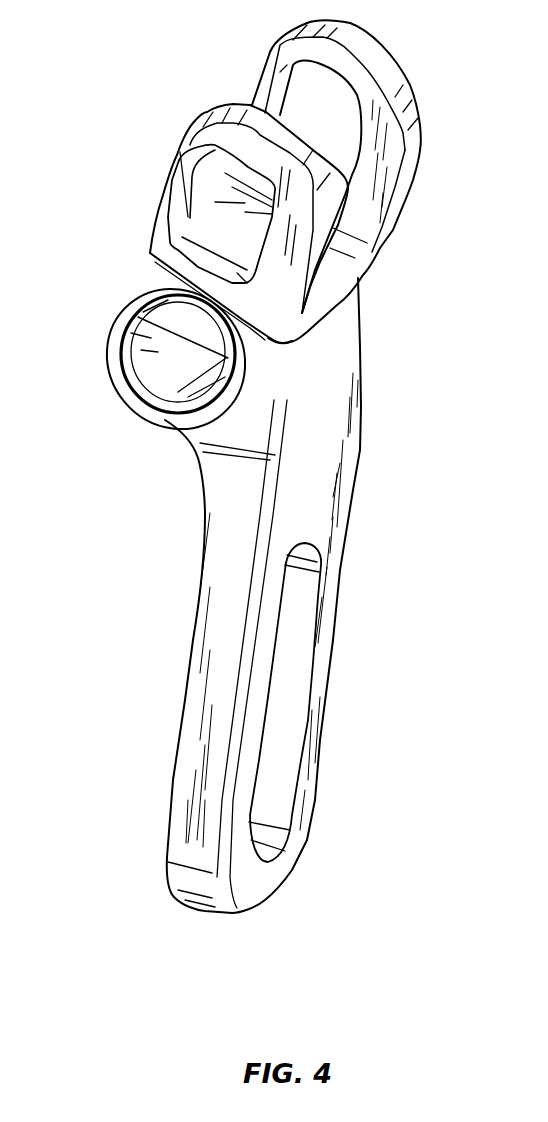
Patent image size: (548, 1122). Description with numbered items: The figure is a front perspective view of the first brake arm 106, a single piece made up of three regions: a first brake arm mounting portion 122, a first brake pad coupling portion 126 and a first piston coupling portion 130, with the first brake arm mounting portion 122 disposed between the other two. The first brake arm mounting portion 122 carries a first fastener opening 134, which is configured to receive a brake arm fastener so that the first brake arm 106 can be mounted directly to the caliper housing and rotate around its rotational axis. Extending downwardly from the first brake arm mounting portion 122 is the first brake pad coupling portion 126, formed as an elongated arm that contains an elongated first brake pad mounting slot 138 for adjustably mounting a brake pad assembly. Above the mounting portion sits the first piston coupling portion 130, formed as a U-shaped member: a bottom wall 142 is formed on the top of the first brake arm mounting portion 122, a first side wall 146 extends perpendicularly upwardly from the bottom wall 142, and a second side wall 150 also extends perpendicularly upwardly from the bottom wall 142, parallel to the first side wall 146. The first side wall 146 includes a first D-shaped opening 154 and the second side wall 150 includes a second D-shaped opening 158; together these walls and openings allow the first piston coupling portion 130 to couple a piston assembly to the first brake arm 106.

The first brake arm 106 is at (363, 452).
The first brake arm mounting portion 122 is at (112, 335).
The first brake pad coupling portion 126 is at (200, 720).
The first piston coupling portion 130 is at (400, 217).
The first fastener opening 134 is at (157, 350).
The first brake pad mounting slot 138 is at (292, 680).
The bottom wall 142 is at (332, 276).
The first side wall 146 is at (170, 168).
The second side wall 150 is at (271, 60).
The first D-shaped opening 154 is at (213, 217).
The second D-shaped opening 158 is at (333, 105).